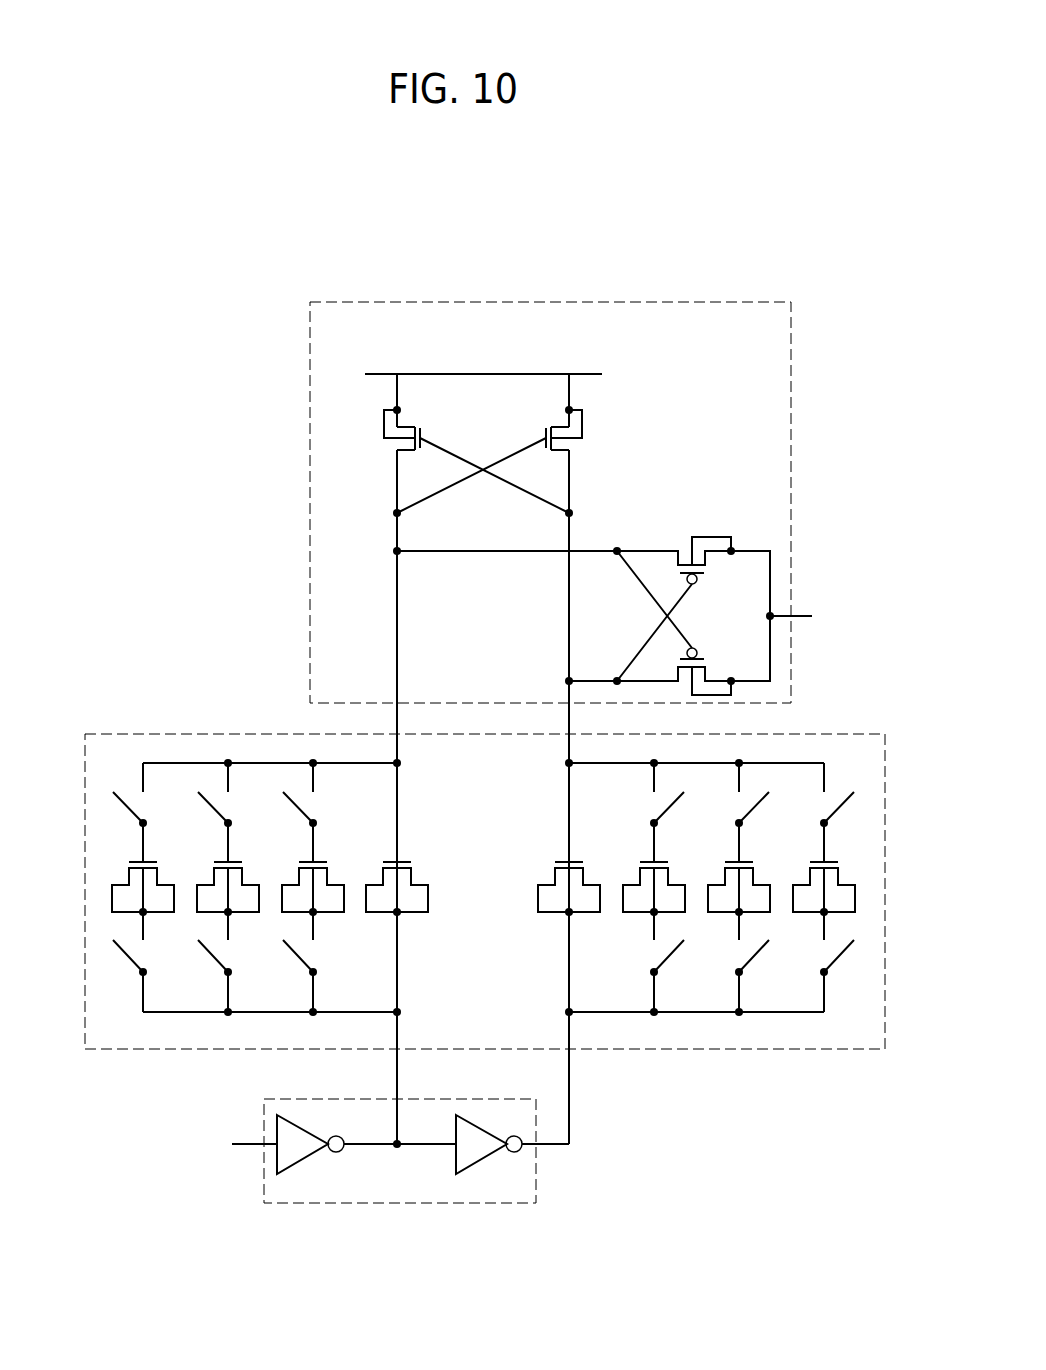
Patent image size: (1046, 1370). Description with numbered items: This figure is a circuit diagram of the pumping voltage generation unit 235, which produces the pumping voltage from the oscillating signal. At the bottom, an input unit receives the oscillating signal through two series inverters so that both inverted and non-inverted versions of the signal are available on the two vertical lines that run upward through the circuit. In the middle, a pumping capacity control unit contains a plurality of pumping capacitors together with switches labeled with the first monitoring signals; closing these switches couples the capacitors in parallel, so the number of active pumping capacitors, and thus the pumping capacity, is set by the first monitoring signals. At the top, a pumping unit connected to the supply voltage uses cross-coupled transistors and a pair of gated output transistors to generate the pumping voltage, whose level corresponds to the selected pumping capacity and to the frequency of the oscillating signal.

The pumping voltage generation unit 235 is at (487, 238).